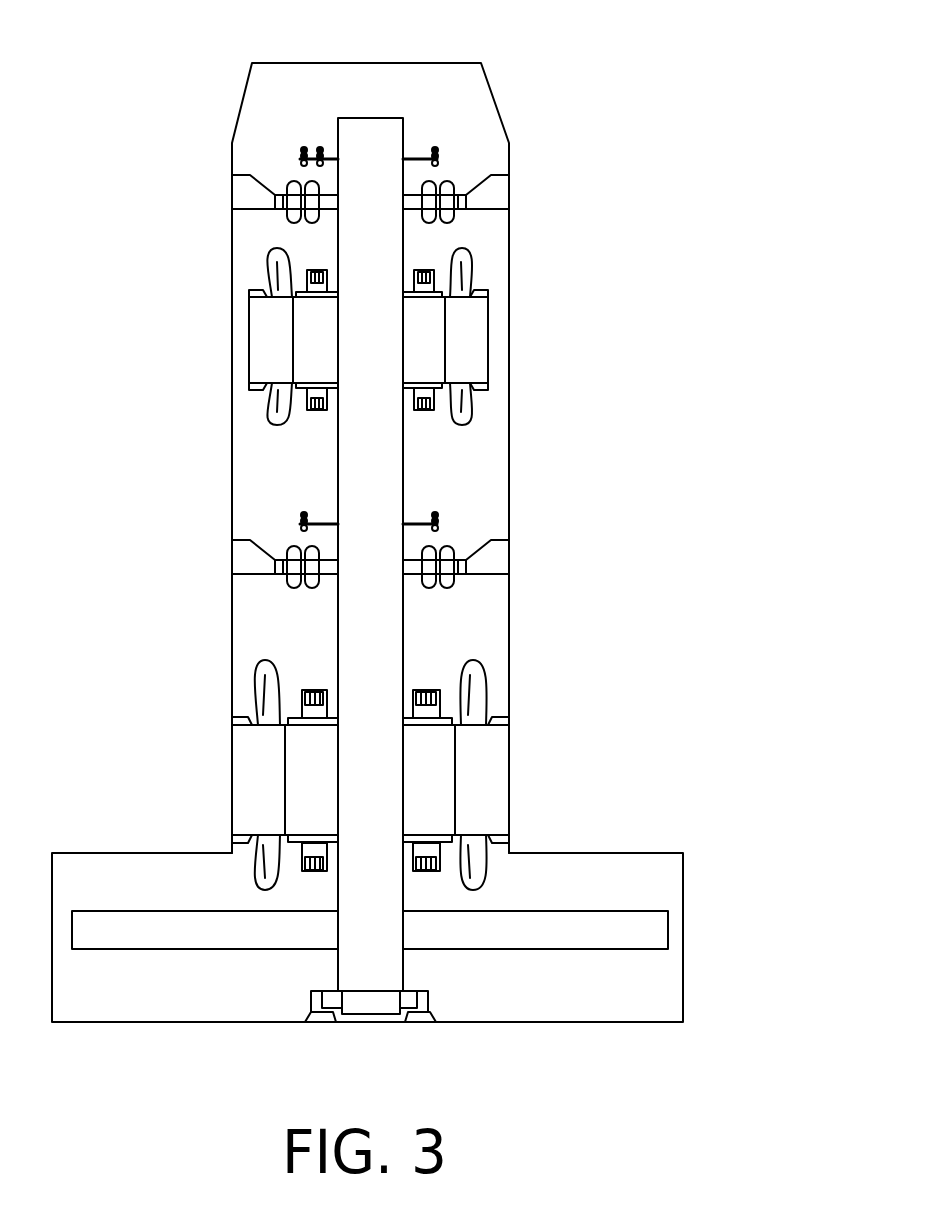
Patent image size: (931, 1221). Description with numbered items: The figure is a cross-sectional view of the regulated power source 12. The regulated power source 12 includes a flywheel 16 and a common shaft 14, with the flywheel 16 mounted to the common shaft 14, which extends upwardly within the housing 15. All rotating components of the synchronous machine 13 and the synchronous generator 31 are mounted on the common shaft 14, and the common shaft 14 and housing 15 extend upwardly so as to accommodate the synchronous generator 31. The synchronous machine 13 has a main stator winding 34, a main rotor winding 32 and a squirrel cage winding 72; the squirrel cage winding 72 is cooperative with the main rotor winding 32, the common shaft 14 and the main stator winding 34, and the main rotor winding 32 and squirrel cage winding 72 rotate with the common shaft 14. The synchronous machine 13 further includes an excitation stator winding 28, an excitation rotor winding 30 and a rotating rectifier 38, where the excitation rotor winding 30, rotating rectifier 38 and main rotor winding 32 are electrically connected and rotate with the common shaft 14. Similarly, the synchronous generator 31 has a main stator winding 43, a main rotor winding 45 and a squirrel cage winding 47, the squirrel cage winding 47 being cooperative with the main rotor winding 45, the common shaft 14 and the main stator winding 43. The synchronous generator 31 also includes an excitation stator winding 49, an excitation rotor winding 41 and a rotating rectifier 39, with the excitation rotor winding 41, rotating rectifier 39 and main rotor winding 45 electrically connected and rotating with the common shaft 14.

The regulated power source 12 is at (625, 422).
The synchronous machine 13 is at (548, 708).
The common shaft 14 is at (372, 643).
The housing 15 is at (625, 853).
The flywheel 16 is at (668, 921).
The excitation stator winding 28 is at (291, 546).
The excitation rotor winding 30 is at (303, 590).
The synchronous generator 31 is at (630, 182).
The main rotor winding 32 is at (424, 688).
The main stator winding 34 is at (487, 875).
The rotating rectifier 38 is at (448, 520).
The rotating rectifier 39 is at (424, 145).
The excitation rotor winding 41 is at (430, 180).
The main stator winding 43 is at (458, 252).
The main rotor winding 45 is at (420, 410).
The squirrel cage winding 47 is at (435, 338).
The excitation stator winding 49 is at (289, 185).
The squirrel cage winding 72 is at (438, 774).